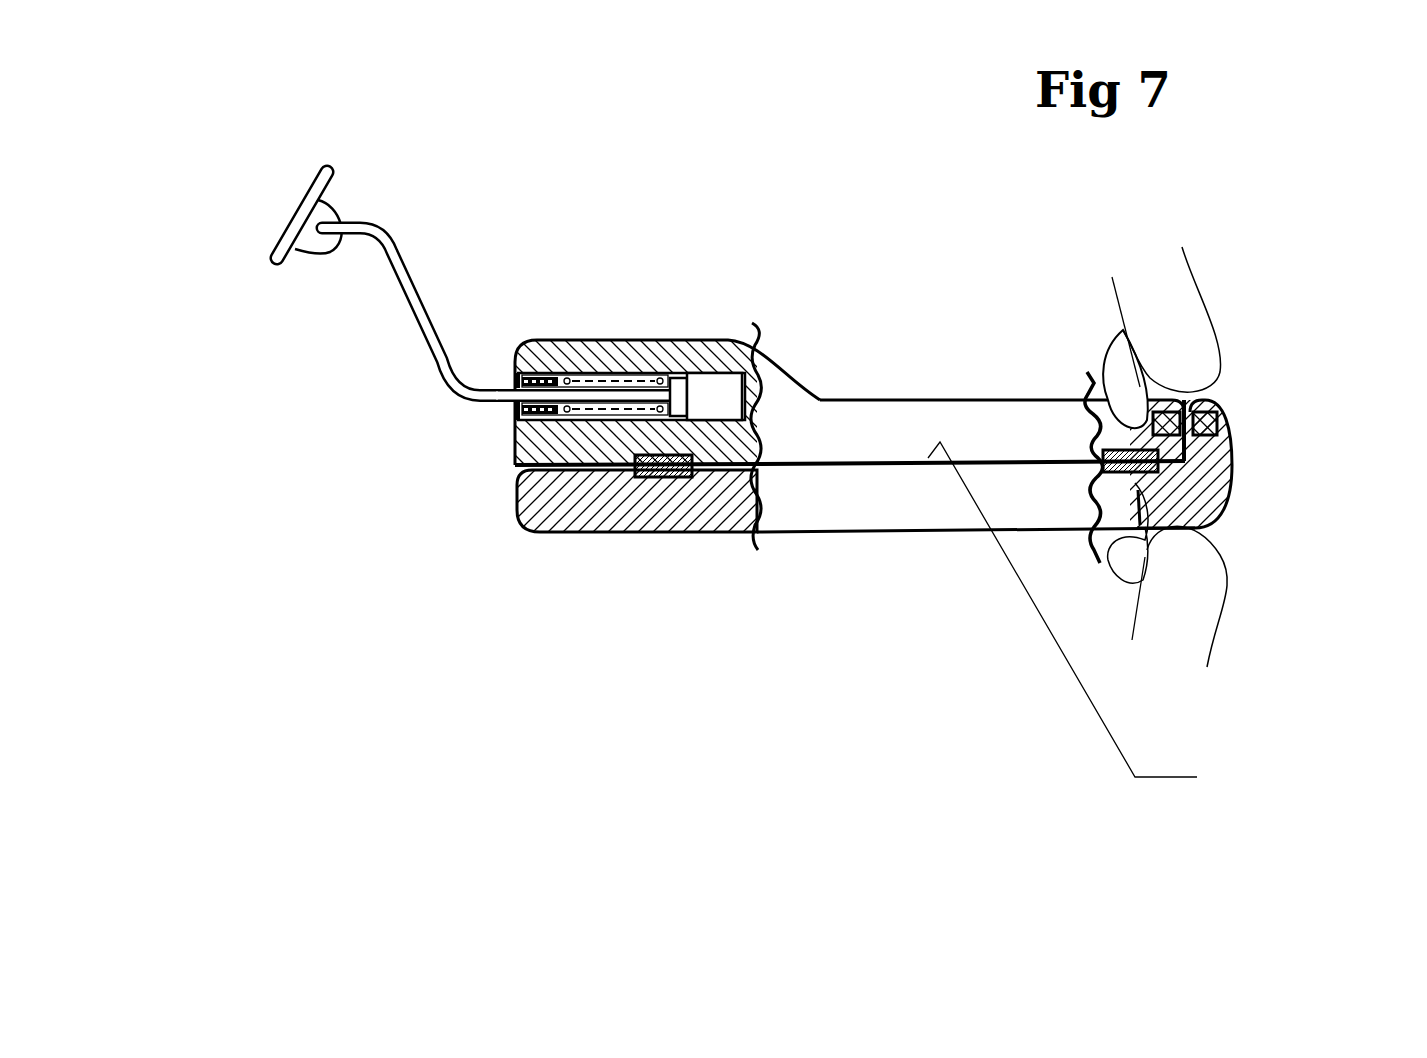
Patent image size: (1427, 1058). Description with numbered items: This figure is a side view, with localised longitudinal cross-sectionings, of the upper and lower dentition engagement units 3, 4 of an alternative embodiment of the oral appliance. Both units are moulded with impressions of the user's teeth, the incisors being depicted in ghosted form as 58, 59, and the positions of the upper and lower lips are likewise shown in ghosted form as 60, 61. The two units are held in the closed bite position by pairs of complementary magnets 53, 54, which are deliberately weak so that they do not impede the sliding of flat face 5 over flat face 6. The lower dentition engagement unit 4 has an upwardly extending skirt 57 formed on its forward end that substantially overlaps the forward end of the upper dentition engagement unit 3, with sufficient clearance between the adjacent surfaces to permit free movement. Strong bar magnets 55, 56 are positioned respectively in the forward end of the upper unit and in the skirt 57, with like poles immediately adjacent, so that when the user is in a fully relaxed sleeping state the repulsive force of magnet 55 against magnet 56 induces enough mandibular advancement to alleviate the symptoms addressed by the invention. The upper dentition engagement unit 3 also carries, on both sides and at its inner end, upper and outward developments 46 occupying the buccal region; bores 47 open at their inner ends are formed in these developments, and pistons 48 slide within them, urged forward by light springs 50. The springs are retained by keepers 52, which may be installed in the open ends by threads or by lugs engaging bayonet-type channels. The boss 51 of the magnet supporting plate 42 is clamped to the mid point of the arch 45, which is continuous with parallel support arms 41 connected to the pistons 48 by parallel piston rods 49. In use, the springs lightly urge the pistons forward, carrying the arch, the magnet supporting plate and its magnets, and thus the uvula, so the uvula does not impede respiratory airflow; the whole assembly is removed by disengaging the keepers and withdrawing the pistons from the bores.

The upper dentition engagement unit 3 is at (968, 420).
The lower dentition engagement unit 4 is at (858, 507).
The flat face 5 is at (1000, 487).
The flat face 6 is at (1074, 619).
The parallel support arms 41 is at (477, 398).
The magnet supporting plate 42 is at (303, 205).
The arch 45 is at (397, 260).
The upper and outward developments 46 is at (594, 373).
The bores 47 is at (712, 395).
The pistons 48 is at (690, 365).
The parallel piston rods 49 is at (613, 397).
The light springs 50 is at (567, 381).
The boss 51 is at (330, 212).
The keepers 52 is at (517, 409).
The complementary magnet 53 is at (610, 468).
The complementary magnet 54 is at (653, 480).
The bar magnet 55 is at (1190, 400).
The bar magnet 56 is at (1222, 415).
The skirt 57 is at (1213, 468).
The incisors 58 is at (1123, 380).
The incisors 59 is at (1133, 538).
The upper lip 60 is at (1175, 350).
The lower lip 61 is at (1177, 597).